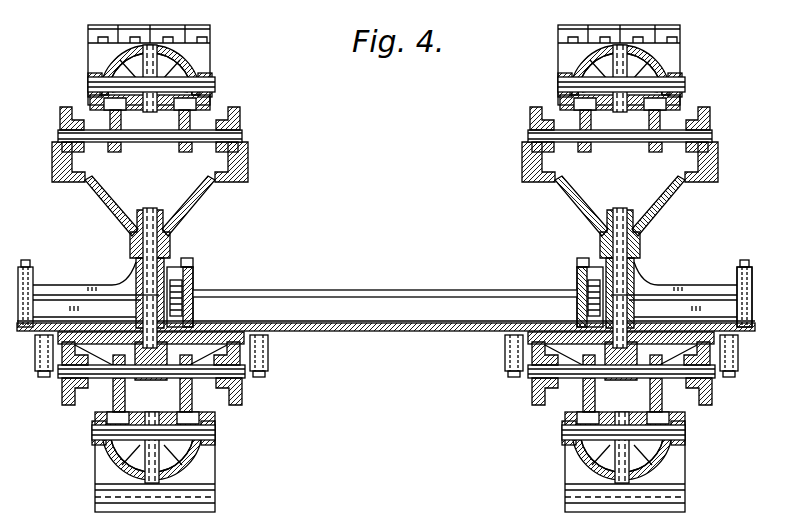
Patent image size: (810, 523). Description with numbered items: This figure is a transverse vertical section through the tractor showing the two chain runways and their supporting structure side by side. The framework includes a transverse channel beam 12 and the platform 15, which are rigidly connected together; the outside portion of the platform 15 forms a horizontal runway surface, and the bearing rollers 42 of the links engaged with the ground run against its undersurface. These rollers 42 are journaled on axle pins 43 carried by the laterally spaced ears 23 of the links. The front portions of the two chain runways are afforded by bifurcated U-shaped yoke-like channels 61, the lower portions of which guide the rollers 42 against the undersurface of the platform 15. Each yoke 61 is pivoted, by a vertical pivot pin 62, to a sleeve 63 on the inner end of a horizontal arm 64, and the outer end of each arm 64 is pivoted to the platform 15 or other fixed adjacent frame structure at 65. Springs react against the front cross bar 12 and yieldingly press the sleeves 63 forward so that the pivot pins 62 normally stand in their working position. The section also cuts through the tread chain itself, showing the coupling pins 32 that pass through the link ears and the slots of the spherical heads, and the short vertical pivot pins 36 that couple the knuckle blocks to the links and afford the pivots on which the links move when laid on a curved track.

The transverse channel beam 12 is at (352, 297).
The platform 15 is at (343, 324).
The ears 23 is at (180, 150).
The coupling pin 32 is at (213, 90).
The vertical pivot pin 36 is at (598, 469).
The bearing roller 42 is at (62, 108).
The axle pin 43 is at (98, 143).
The yoke-like channel 61 is at (92, 200).
The vertical pivot pin 62 is at (149, 210).
The sleeve 63 is at (168, 254).
The horizontal arm 64 is at (68, 287).
The arm pivot 65 is at (748, 268).